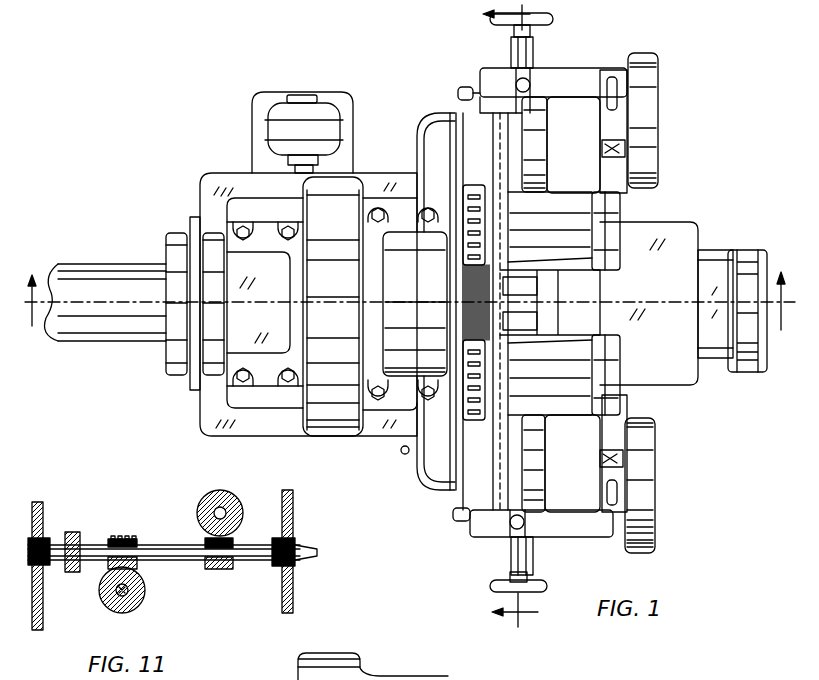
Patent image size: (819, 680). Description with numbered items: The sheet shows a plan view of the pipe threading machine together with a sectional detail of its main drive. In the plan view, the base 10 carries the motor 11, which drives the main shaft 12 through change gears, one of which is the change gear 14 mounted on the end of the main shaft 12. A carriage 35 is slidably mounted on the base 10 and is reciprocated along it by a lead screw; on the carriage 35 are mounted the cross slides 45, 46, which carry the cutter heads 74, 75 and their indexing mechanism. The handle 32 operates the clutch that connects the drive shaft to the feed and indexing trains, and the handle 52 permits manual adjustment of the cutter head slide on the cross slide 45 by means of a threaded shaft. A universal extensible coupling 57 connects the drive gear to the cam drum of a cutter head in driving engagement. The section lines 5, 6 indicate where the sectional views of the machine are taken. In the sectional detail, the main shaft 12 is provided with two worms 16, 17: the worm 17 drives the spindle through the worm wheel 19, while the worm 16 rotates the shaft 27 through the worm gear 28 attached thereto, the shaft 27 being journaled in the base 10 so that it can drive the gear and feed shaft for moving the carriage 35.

In FIG. 1, the section line 5- 5 is at (406, 292).
In FIG. 1, the section line 6- 6 is at (500, 316).
In FIG. 1, the base 10 is at (210, 175).
In FIG. 1, the motor 11 is at (333, 115).
In FIG. 1, the handle 32 is at (401, 452).
In FIG. 1, the carriage 35 is at (677, 243).
In FIG. 1, the cross slide 45 is at (578, 447).
In FIG. 1, the cross slide 46 is at (570, 113).
In FIG. 1, the handle 52 is at (548, 19).
In FIG. 1, the universal extensible coupling 57 is at (603, 463).
In FIG. 1, the cutter head 74 is at (455, 115).
In FIG. 1, the cutter head 75 is at (455, 490).
In FIG. 11, the main shaft 12 is at (176, 530).
In FIG. 11, the change gear 14 is at (75, 571).
In FIG. 11, the worm 16 is at (137, 522).
In FIG. 11, the worm 17 is at (232, 570).
In FIG. 11, the worm wheel 19 is at (238, 500).
In FIG. 11, the shaft 27 is at (130, 588).
In FIG. 11, the worm gear 28 is at (135, 605).